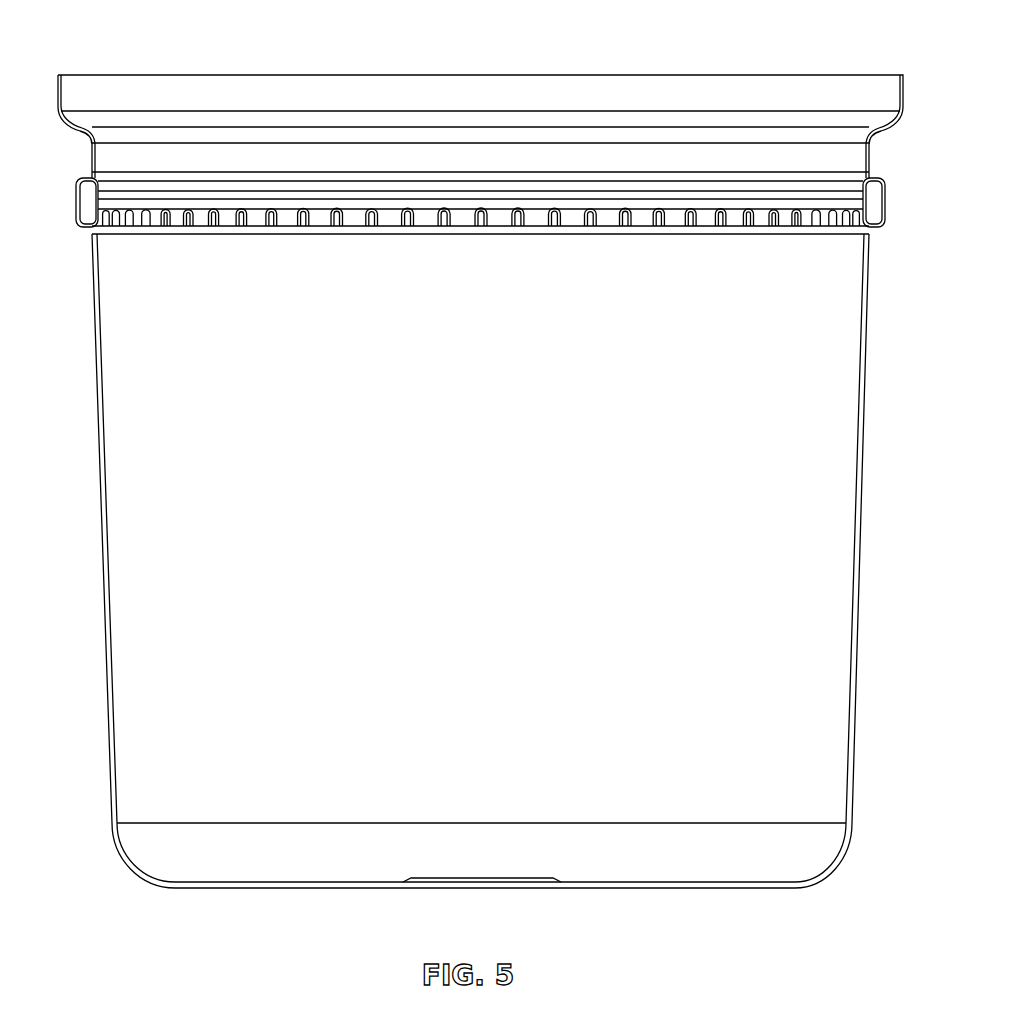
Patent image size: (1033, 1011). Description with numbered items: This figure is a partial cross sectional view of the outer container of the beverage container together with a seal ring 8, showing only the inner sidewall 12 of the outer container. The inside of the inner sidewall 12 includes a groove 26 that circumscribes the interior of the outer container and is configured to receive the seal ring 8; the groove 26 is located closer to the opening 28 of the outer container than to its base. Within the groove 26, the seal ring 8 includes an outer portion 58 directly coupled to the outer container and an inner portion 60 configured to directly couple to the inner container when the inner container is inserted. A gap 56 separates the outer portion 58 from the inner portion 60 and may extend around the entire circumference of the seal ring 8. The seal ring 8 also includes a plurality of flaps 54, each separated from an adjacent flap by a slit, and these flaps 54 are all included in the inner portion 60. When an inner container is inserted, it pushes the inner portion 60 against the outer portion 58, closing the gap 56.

The opening 28 is at (597, 73).
The groove 26 is at (880, 228).
The inner portion 60 is at (98, 233).
The outer portion 58 is at (75, 196).
The gap 56 is at (873, 212).
The plurality of flaps 54 is at (290, 216).
The seal ring 8 is at (427, 215).
The inner sidewall 12 is at (105, 410).